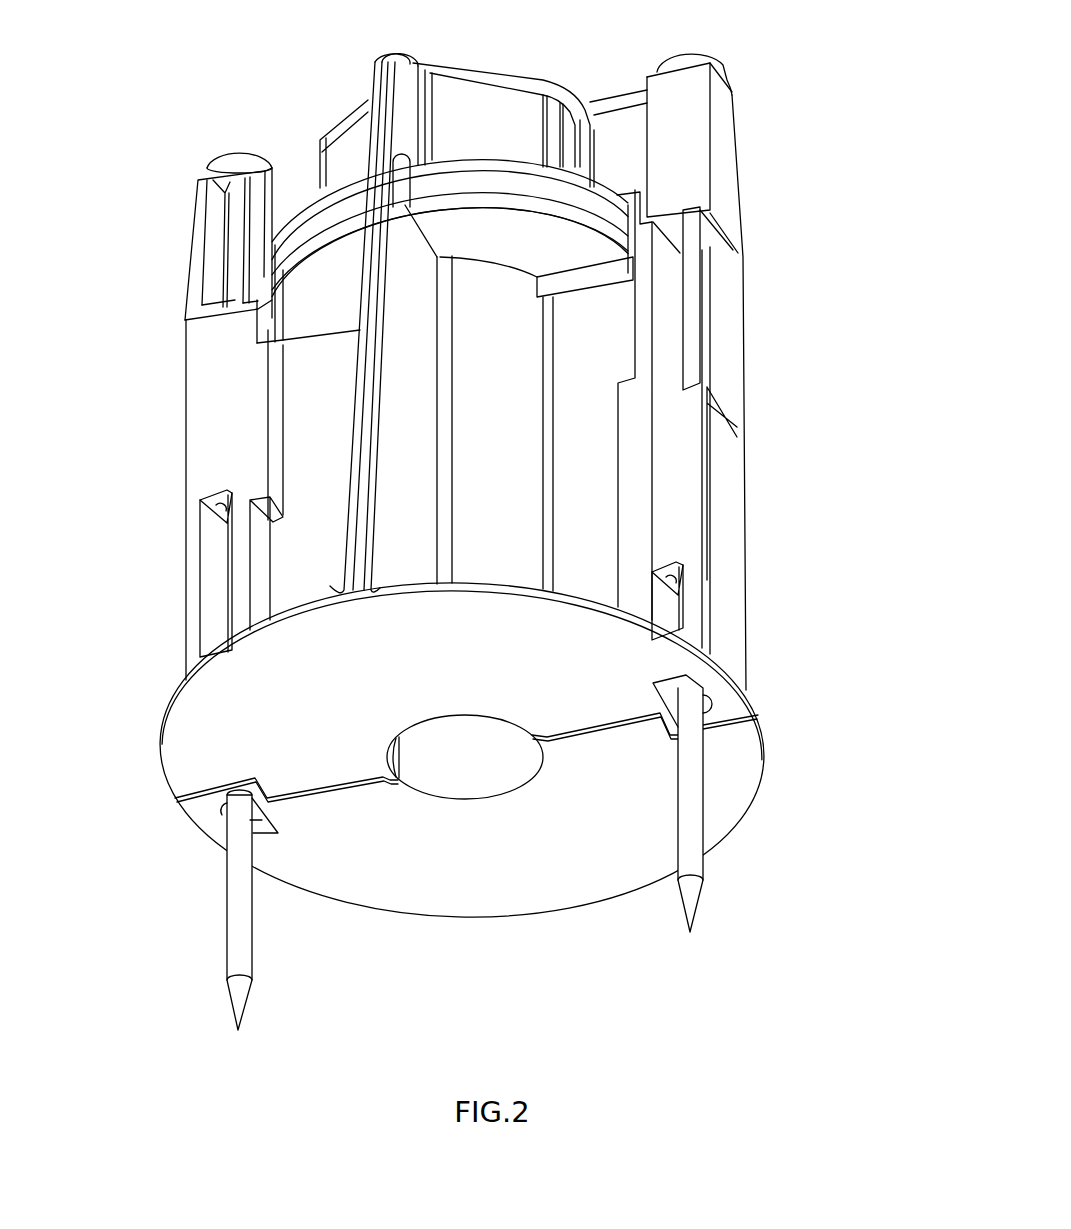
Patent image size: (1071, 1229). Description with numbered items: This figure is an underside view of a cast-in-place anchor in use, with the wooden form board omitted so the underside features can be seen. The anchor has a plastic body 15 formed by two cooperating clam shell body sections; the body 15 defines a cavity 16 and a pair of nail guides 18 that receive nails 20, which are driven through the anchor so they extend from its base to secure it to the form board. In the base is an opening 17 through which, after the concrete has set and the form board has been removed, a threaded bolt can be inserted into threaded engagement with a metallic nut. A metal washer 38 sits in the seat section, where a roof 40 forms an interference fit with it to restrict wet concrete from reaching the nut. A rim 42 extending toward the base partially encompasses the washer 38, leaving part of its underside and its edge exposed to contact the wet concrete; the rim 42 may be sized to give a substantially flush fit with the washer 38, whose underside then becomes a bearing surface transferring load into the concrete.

The body 15 is at (792, 172).
The cavity 16 is at (476, 735).
The opening 17 is at (440, 773).
The nail guides 18 is at (181, 477).
The nails 20 is at (243, 892).
The washer 38 is at (575, 260).
The roof 40 is at (600, 188).
The rim 42 is at (313, 203).